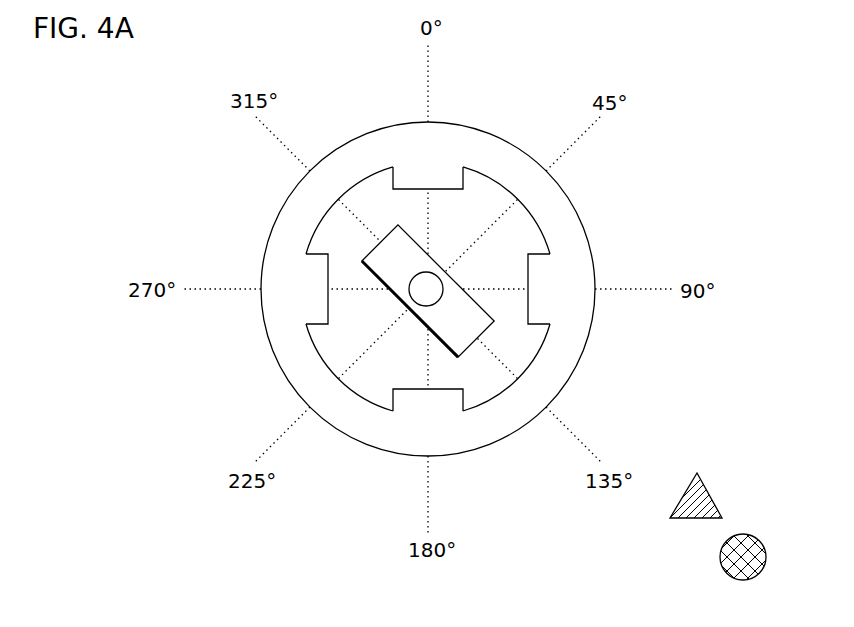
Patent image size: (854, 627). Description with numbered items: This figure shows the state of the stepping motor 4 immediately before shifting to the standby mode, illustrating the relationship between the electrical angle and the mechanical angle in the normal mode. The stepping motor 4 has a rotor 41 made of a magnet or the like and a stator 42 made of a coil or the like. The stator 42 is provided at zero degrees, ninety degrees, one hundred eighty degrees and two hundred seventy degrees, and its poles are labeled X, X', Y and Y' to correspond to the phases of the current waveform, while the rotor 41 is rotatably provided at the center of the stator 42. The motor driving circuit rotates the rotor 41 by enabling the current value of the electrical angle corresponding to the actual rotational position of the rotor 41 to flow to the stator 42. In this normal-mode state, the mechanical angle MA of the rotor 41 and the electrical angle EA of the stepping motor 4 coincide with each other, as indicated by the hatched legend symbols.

The stepping motor 4 is at (441, 281).
The rotor 41 is at (365, 245).
The stator 42 is at (441, 281).
The mechanical angle MA is at (701, 490).
The electrical angle EA is at (767, 555).